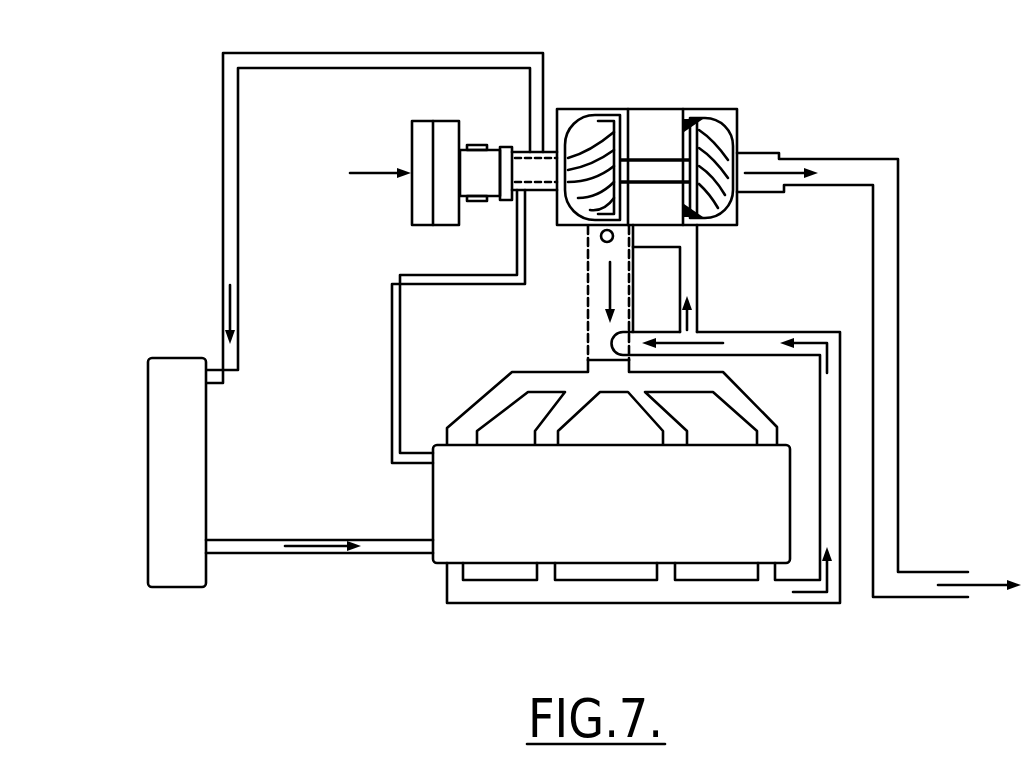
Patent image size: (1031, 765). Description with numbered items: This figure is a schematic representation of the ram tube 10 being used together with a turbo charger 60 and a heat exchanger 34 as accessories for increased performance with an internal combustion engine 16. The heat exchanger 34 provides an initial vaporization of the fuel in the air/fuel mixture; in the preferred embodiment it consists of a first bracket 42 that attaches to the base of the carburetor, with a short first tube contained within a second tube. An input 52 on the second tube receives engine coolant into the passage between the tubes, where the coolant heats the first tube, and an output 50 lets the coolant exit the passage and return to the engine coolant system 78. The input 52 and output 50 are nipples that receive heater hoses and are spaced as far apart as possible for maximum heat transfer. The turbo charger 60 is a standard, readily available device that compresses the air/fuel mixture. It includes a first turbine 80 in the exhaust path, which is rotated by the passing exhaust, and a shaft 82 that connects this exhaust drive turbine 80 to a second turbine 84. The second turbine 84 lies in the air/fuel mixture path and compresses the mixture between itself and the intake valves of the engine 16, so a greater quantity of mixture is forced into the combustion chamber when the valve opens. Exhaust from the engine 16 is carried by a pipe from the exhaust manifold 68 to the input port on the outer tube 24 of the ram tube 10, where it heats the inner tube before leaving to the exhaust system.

The ram tube 10 is at (512, 335).
The internal combustion engine 16 is at (586, 527).
The outer tube 24 is at (586, 293).
The heat exchanger 34 is at (556, 136).
The first bracket 42 is at (506, 148).
The output 50 is at (533, 170).
The input 52 is at (513, 202).
The turbo charger 60 is at (728, 124).
The exhaust manifold 68 is at (762, 588).
The engine coolant system 78 is at (167, 382).
The first turbine 80 is at (740, 153).
The shaft 82 is at (707, 163).
The second turbine 84 is at (657, 167).